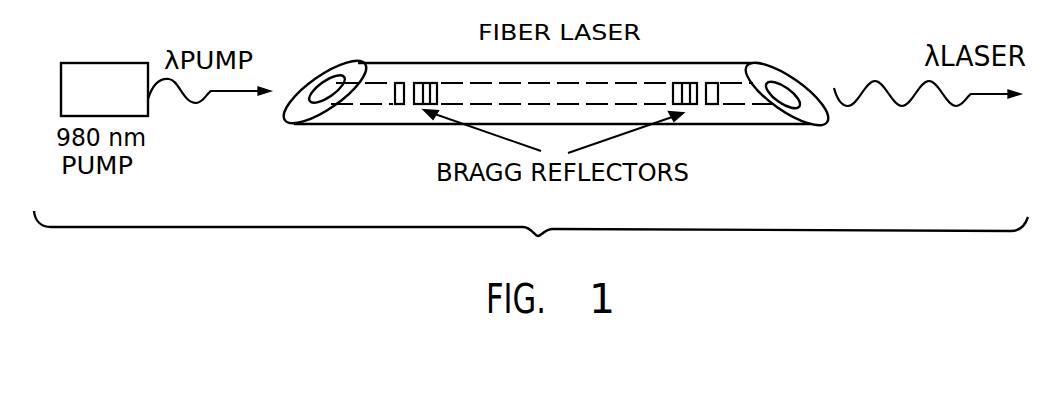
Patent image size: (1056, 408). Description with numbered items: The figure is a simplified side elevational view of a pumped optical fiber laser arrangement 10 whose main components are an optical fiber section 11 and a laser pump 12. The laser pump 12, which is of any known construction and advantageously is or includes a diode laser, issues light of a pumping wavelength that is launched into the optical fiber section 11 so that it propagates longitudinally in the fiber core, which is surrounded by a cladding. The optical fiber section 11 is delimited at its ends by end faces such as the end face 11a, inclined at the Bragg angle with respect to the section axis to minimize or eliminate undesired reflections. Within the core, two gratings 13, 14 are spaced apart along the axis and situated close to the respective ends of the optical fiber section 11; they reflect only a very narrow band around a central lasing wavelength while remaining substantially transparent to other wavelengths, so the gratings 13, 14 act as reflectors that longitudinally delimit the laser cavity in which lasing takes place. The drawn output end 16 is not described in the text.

The pumped optical fiber laser arrangement 10 is at (531, 240).
The optical fiber section 11 is at (677, 62).
The end face 11a is at (333, 62).
The laser pump 12 is at (108, 68).
The grating 13 is at (413, 81).
The grating 14 is at (702, 82).
The output end of fiber 16 is at (772, 75).